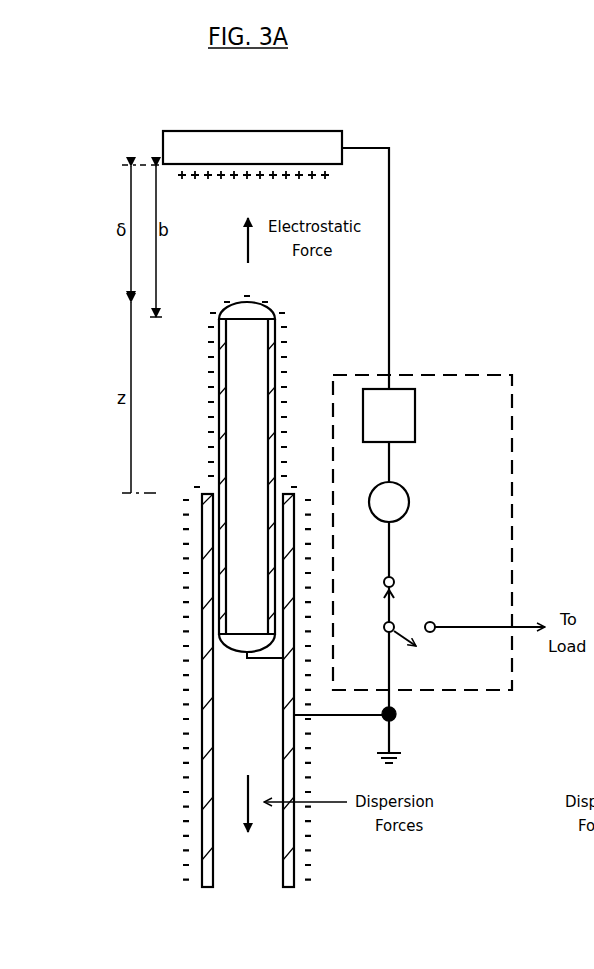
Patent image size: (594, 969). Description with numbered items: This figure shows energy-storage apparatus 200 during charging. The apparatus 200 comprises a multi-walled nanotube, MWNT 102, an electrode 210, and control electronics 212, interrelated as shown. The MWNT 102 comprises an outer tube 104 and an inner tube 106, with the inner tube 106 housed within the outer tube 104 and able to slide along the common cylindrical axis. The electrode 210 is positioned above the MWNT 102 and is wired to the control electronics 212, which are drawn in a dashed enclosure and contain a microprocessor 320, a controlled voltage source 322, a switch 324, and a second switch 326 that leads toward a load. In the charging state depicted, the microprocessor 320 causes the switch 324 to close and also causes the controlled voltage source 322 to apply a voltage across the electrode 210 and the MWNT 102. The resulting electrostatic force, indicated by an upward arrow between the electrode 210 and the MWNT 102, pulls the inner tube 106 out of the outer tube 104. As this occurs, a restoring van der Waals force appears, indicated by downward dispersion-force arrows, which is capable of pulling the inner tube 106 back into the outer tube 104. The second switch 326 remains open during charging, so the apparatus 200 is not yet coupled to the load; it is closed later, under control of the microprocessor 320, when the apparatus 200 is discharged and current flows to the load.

The MWNT 102 is at (140, 688).
The outer tube 104 is at (201, 658).
The inner tube 106 is at (262, 455).
The energy-storage apparatus 200 is at (420, 150).
The electrode 210 is at (312, 159).
The control electronics 212 is at (415, 375).
The microprocessor 320 is at (415, 418).
The controlled voltage source 322 is at (409, 500).
The switch 324 is at (398, 602).
The switch 326 is at (421, 660).